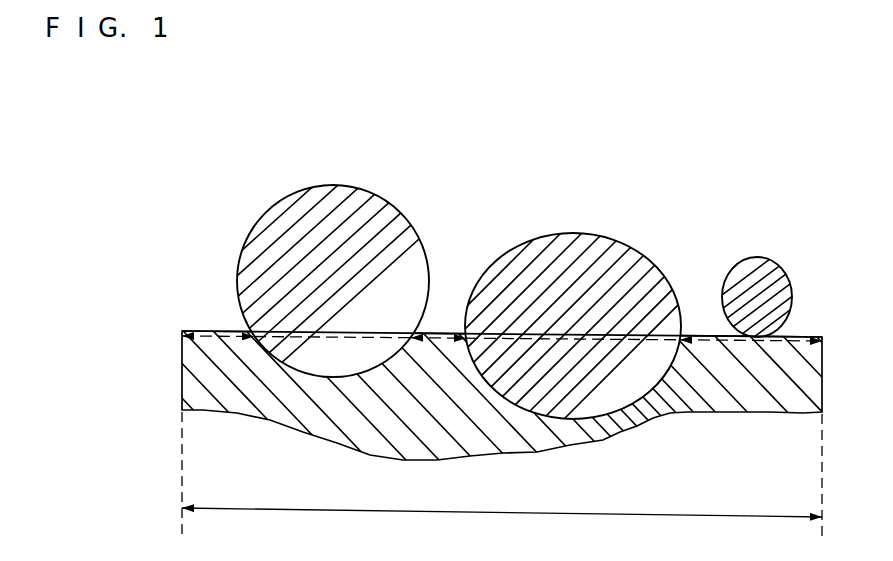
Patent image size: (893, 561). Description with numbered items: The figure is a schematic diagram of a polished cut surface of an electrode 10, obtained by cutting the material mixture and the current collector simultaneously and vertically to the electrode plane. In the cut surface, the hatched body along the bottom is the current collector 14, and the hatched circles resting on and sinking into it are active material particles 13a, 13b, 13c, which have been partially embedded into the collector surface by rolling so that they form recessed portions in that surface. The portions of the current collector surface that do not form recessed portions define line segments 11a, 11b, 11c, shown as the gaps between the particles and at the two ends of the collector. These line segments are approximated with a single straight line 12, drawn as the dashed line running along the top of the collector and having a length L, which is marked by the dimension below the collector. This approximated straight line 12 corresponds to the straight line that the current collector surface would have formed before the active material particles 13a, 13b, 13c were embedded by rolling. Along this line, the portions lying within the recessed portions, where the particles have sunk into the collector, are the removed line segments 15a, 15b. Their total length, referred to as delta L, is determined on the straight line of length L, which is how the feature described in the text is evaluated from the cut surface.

The electrode 10 is at (648, 158).
The line segment 11a is at (210, 330).
The line segment 11b is at (443, 330).
The line segment 11c is at (708, 337).
The approximated straight line 12 is at (199, 346).
The active material particle 13a is at (371, 214).
The active material particle 13b is at (567, 237).
The active material particle 13c is at (780, 290).
The current collector 14 is at (795, 378).
The line segment removed by recessed portion 15a is at (327, 333).
The line segment removed by recessed portion 15b is at (573, 337).
The length of approximated straight line L is at (502, 479).